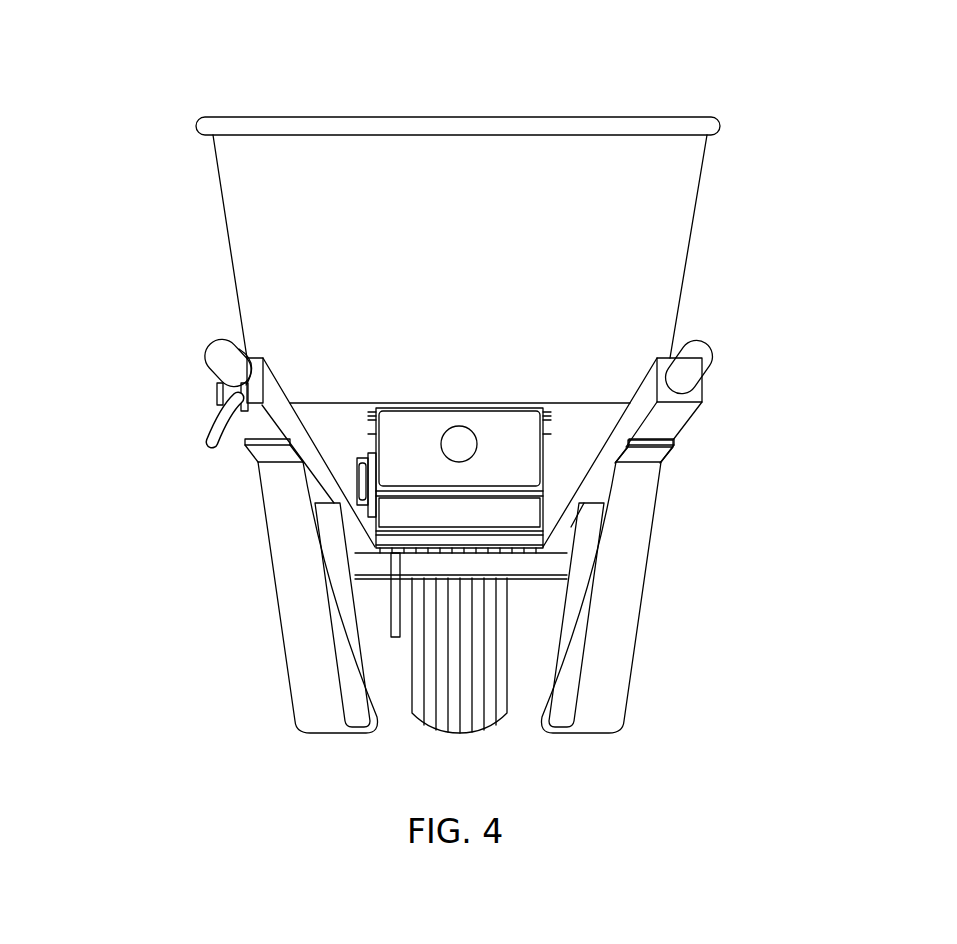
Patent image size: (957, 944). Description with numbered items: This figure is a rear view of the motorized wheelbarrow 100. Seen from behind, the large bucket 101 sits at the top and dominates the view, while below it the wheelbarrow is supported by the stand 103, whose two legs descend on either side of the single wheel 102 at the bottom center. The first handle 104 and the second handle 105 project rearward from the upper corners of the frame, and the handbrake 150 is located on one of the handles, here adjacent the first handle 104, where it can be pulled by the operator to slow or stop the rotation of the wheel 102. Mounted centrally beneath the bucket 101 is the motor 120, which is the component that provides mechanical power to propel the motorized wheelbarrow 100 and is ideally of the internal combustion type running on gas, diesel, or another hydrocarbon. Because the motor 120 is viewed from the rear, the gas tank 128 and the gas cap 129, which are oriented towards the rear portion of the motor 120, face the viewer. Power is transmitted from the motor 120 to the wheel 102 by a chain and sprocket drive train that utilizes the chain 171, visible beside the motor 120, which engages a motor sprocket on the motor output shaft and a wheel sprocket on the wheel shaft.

The motorized wheelbarrow 100 is at (838, 130).
The bucket 101 is at (698, 207).
The wheel 102 is at (484, 713).
The stand 103 is at (290, 553).
The first handle 104 is at (218, 350).
The second handle 105 is at (700, 352).
The motor 120 is at (513, 537).
The gas tank 128 is at (511, 470).
The gas cap 129 is at (468, 438).
The handbrake 150 is at (217, 432).
The chain 171 is at (397, 602).